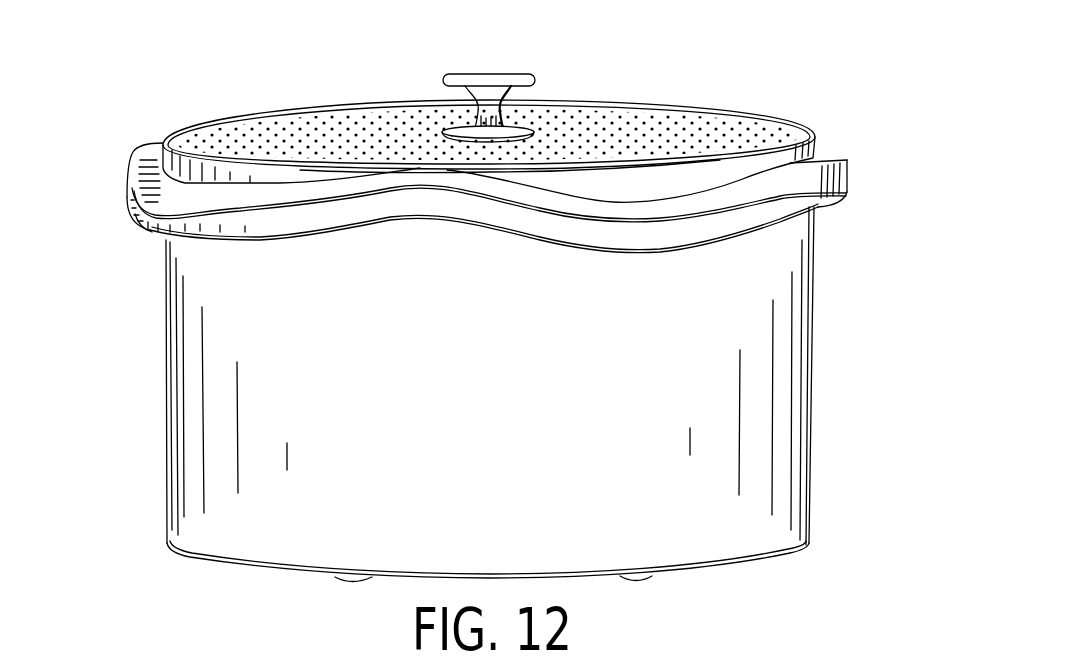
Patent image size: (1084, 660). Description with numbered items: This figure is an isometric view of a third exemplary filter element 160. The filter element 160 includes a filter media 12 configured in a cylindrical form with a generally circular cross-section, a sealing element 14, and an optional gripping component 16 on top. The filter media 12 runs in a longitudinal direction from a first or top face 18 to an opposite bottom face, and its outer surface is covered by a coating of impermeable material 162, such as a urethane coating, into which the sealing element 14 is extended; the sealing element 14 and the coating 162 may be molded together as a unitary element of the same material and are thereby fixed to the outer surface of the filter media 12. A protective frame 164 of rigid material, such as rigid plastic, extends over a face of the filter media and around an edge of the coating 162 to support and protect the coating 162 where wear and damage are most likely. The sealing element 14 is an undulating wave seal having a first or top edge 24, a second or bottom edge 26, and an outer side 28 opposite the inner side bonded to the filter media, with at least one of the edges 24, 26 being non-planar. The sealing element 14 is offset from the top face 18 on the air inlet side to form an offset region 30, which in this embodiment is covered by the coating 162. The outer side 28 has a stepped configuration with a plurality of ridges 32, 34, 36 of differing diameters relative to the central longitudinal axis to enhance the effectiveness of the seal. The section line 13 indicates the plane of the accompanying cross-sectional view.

The filter media 12 is at (255, 129).
The section line 13- 13 is at (143, 118).
The sealing element 14 is at (106, 208).
The gripping component 16 is at (493, 80).
The top face 18 is at (308, 118).
The top edge 24 is at (145, 150).
The bottom edge 26 is at (147, 228).
The outer side 28 is at (128, 187).
The offset region 30 is at (208, 176).
The ridge 32 is at (851, 193).
The ridge 34 is at (848, 180).
The ridge 36 is at (849, 170).
The filter element 160 is at (688, 79).
The coating of impermeable material 162 is at (163, 422).
The protective frame 164 is at (305, 578).